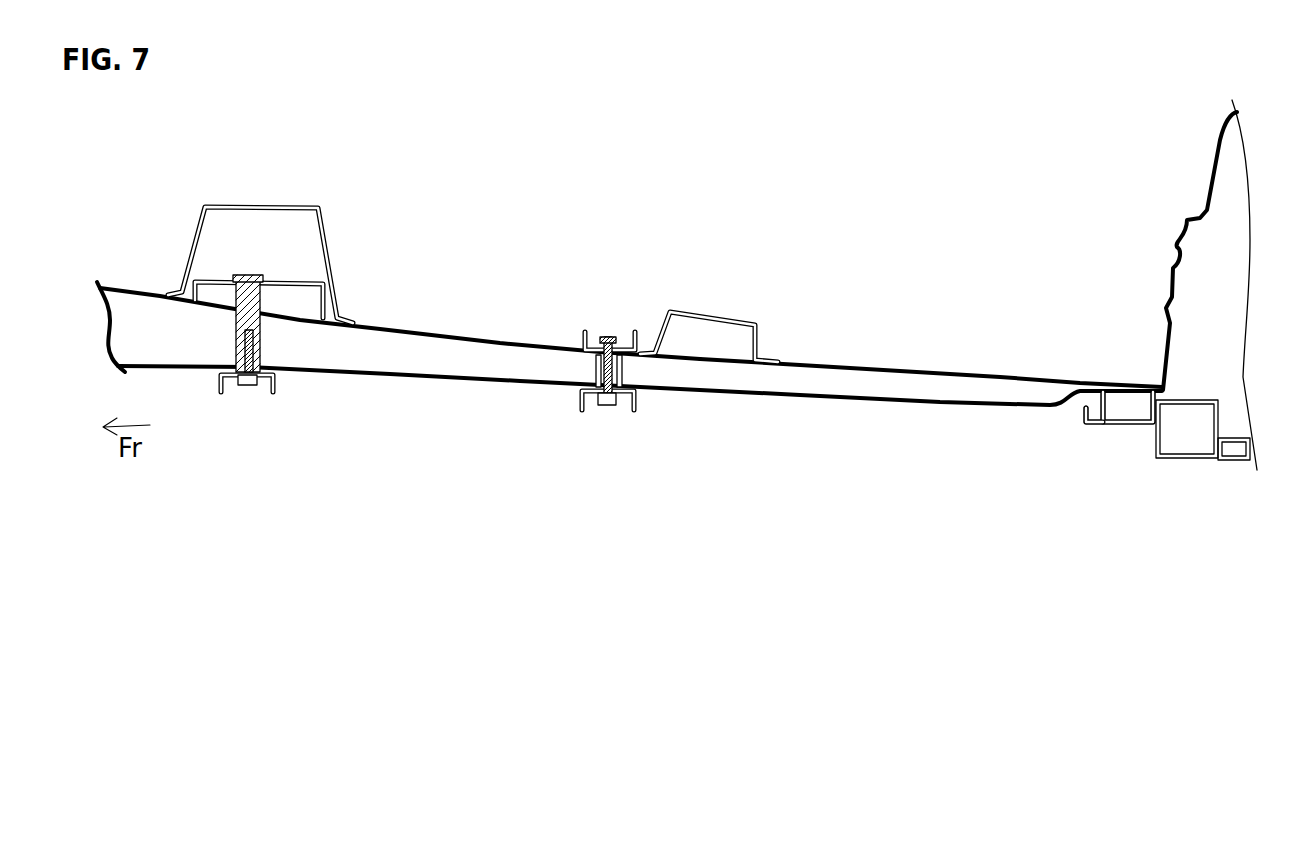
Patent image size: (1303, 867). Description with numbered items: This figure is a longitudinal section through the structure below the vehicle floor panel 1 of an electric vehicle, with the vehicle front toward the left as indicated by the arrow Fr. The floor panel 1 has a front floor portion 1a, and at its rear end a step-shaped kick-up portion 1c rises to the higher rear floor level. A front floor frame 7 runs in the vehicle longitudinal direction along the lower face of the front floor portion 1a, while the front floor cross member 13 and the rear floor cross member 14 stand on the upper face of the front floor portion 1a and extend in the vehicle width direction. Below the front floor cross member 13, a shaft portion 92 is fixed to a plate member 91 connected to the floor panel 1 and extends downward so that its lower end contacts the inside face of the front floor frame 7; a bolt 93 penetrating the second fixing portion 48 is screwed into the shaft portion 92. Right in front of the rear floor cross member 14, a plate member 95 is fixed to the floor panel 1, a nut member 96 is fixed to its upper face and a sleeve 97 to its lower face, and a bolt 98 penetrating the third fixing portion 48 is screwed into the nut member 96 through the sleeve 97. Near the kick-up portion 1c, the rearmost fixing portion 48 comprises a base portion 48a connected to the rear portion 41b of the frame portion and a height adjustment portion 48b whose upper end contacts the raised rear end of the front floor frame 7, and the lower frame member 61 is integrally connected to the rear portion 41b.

The vehicle floor panel 1 is at (450, 337).
The front floor portion 1a is at (900, 367).
The kick-up portion 1c is at (1173, 270).
The front floor frame 7 is at (347, 378).
The front floor cross member 13 is at (267, 207).
The rear floor cross member 14 is at (720, 317).
The rear portion of the frame portion 41b is at (1190, 460).
The fixing portion 48 is at (220, 382).
The base portion 48a is at (1128, 425).
The height adjustment portion 48b is at (1097, 400).
The lower frame member 61 is at (1232, 467).
The plate member 91 is at (298, 281).
The shaft portion 92 is at (243, 325).
The bolt 93 is at (247, 386).
The plate member 95 is at (584, 340).
The nut member 96 is at (603, 341).
The sleeve 97 is at (597, 368).
The bolt 98 is at (610, 407).